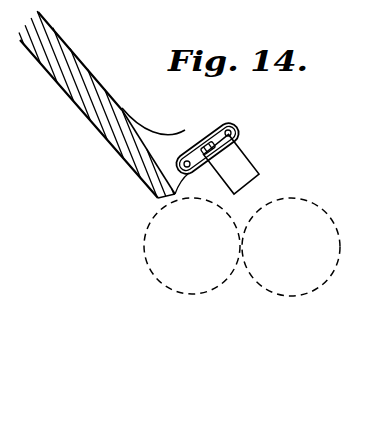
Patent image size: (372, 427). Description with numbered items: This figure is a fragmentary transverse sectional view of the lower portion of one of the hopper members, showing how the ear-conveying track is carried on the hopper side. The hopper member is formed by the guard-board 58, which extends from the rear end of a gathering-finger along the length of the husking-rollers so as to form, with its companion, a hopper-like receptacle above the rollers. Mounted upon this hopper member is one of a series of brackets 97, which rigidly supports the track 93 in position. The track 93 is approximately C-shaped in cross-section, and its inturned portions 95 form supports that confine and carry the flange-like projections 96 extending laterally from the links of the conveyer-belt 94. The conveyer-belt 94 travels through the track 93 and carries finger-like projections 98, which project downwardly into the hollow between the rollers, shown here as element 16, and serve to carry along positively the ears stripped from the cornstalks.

The guard-board 58 is at (80, 66).
The flange-like projections 96 is at (168, 184).
The brackets 97 is at (143, 133).
The finger-like projections 98 is at (259, 174).
The track 93 is at (225, 127).
The conveyer-belt 94 is at (226, 153).
The inturned portions 95 is at (232, 150).
The wheels 16 is at (301, 200).